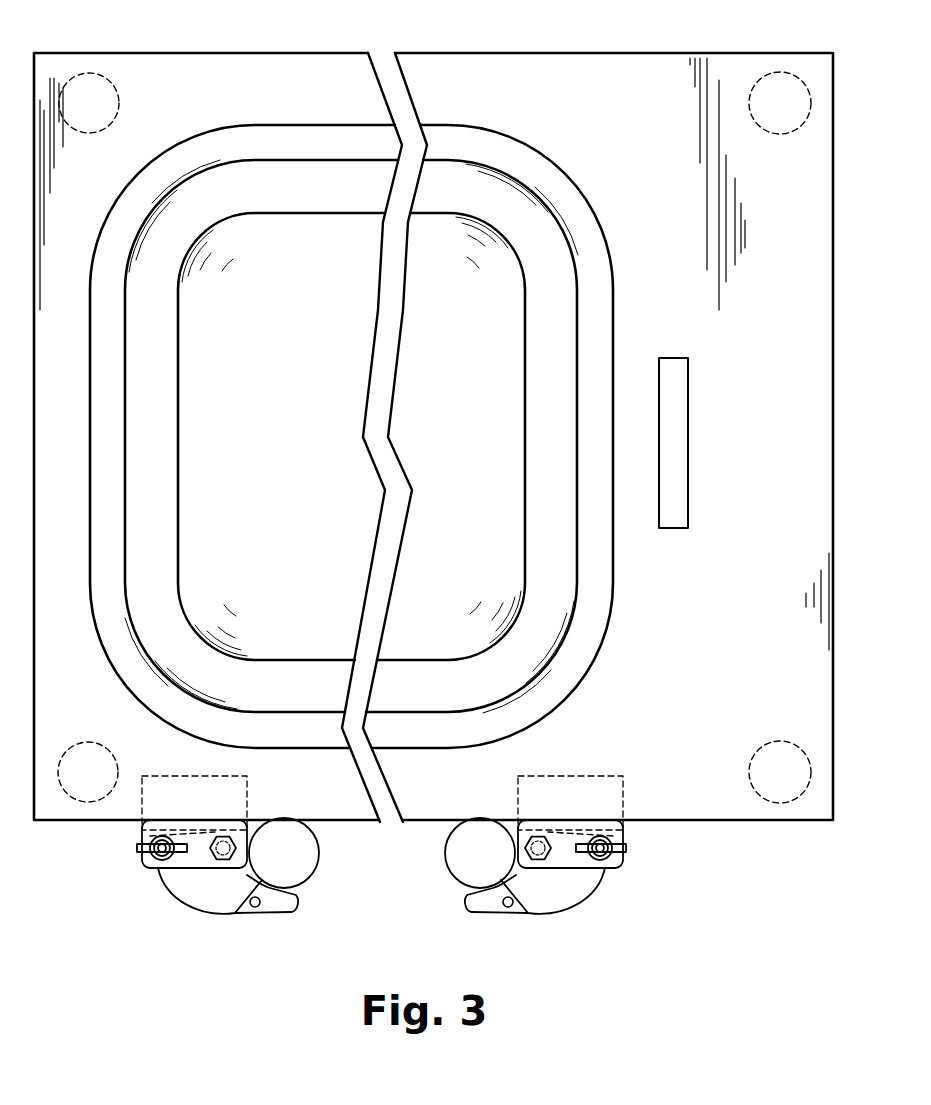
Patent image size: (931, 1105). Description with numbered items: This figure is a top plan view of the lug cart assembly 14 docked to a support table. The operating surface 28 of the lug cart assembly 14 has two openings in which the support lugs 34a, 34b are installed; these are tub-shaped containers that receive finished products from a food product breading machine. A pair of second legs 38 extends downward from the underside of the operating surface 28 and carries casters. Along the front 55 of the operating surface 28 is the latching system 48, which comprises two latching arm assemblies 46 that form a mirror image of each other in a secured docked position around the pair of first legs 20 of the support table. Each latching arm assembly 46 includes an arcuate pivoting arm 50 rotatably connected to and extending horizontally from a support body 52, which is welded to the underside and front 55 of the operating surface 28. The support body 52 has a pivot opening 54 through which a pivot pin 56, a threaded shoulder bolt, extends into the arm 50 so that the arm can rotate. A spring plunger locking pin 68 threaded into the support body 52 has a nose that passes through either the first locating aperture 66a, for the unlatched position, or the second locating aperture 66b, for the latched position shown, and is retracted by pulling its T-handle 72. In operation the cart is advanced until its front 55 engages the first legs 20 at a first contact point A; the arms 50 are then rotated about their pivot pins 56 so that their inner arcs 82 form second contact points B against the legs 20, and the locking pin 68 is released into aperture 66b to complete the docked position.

The lug cart assembly 14 is at (840, 106).
The pair of first legs 20 is at (382, 876).
The operating surface 28 is at (708, 575).
The support lug 34a is at (281, 562).
The support lug 34b is at (491, 567).
The pair of second legs 38 is at (68, 746).
The latching arm assembly 46 is at (380, 863).
The latching system 48 is at (435, 863).
The arcuate pivoting arm 50 is at (200, 910).
The support body 52 is at (142, 862).
The pivot opening 54 is at (247, 822).
The front 55 is at (362, 822).
The pivot pin 56 is at (222, 836).
The first locating aperture 66a is at (255, 908).
The second locating aperture 66b is at (142, 838).
The locking pin 68 is at (163, 838).
The T-handle 72 is at (180, 844).
The inner arc 82 is at (266, 880).
The first contact point A is at (300, 818).
The second contact point B is at (228, 910).